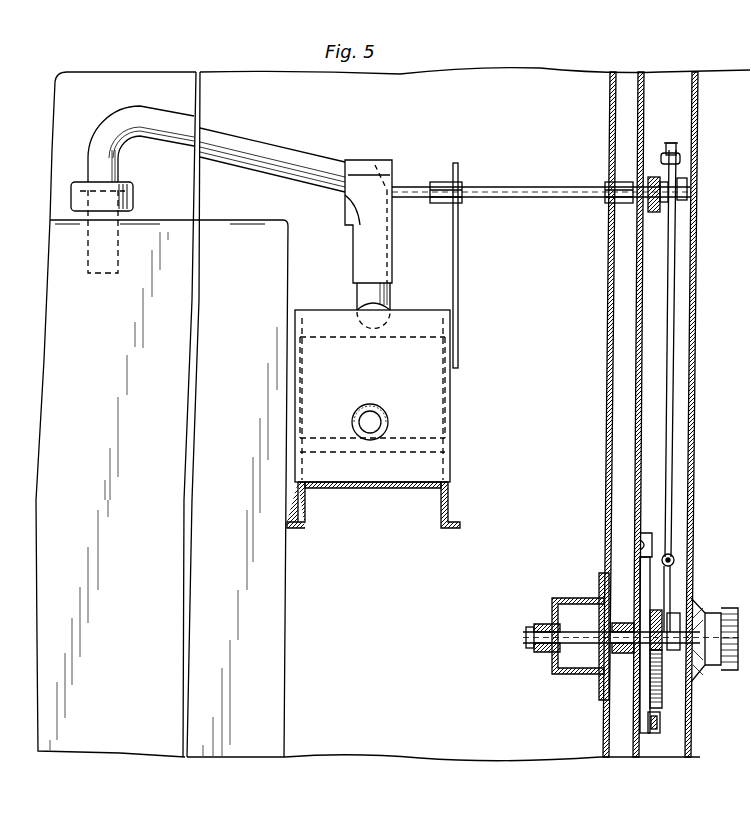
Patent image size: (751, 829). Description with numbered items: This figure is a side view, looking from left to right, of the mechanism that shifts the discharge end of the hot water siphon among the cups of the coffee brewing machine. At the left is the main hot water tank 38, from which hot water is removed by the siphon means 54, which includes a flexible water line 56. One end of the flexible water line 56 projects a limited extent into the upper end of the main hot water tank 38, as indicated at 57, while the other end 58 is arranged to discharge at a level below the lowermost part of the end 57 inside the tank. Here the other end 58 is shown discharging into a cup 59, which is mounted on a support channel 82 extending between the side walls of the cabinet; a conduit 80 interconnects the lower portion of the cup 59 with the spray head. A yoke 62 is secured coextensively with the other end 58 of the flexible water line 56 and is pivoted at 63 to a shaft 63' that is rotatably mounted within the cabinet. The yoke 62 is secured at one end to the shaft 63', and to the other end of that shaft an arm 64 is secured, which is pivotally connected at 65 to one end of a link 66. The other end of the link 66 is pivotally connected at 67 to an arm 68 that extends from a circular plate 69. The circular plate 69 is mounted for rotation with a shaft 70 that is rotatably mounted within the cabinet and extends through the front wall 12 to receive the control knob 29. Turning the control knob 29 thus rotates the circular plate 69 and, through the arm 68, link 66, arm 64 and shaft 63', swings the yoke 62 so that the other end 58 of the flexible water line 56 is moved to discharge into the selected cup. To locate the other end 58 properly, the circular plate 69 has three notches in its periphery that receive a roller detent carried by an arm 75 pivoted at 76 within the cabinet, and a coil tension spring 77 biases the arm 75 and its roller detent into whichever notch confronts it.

The front wall 12 is at (697, 335).
The control knob 29 is at (712, 612).
The main hot water tank 38 is at (287, 613).
The siphon means 54 is at (216, 141).
The flexible water line 56 is at (226, 138).
The end of flexible water line 57 is at (106, 274).
The other end of flexible water line 58 is at (391, 302).
The cup 59 is at (393, 396).
The yoke 62 is at (393, 238).
The pivot 63 is at (445, 254).
The shaft 63' is at (541, 174).
The arm 64 is at (666, 150).
The pivot 65 is at (681, 160).
The link 66 is at (677, 257).
The pivot 67 is at (675, 558).
The arm 68 is at (670, 590).
The circular plate 69 is at (668, 700).
The shaft 70 is at (575, 633).
The arm 75 is at (646, 687).
The pivot 76 is at (640, 545).
The coil tension spring 77 is at (662, 725).
The conduit 80 is at (389, 422).
The support channel 82 is at (449, 505).